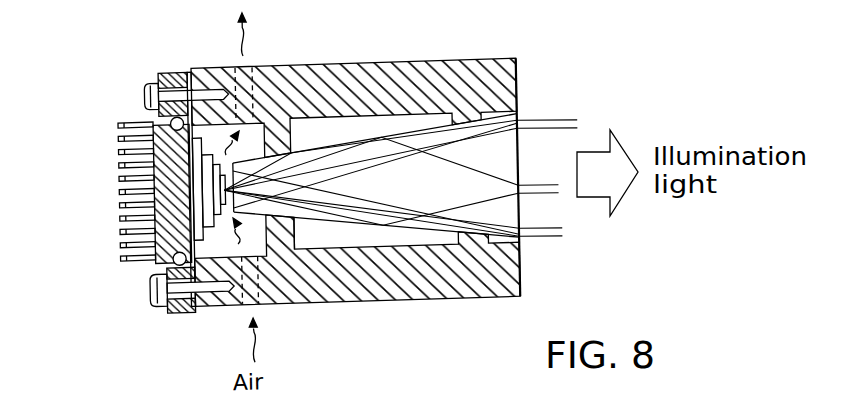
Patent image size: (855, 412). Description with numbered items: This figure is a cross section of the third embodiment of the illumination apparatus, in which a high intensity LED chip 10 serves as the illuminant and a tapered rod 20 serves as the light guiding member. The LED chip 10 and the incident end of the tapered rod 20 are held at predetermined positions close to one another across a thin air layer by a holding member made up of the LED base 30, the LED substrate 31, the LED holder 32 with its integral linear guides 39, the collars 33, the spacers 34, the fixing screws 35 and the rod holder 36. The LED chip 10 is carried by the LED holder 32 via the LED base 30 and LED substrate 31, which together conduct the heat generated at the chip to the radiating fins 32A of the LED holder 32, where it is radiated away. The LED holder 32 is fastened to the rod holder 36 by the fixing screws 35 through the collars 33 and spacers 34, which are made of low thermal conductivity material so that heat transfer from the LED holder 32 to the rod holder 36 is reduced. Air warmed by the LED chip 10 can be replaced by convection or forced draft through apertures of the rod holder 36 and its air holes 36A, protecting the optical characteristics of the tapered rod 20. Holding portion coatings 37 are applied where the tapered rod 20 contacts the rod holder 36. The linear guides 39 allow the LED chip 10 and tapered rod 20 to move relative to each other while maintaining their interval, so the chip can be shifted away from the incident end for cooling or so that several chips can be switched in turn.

The LED chip 10 is at (216, 169).
The tapered rod 20 is at (408, 162).
The LED base 30 is at (159, 125).
The LED substrate 31 is at (204, 149).
The LED holder 32 is at (161, 182).
The radiating fins 32A is at (121, 208).
The collars 33 is at (160, 302).
The spacers 34 is at (193, 311).
The fixing screws 35 is at (147, 286).
The rod holder 36 is at (221, 67).
The air holes 36A is at (258, 294).
The holding portion coatings 37 is at (299, 225).
The linear guides 39 is at (168, 260).